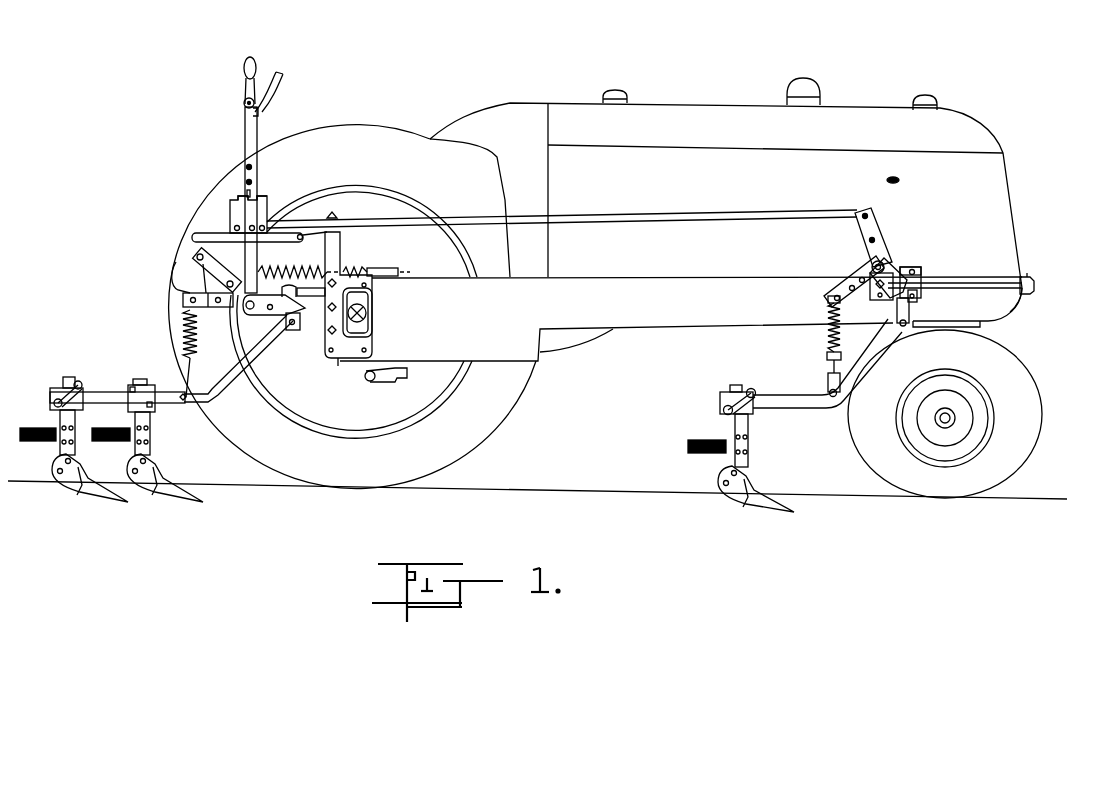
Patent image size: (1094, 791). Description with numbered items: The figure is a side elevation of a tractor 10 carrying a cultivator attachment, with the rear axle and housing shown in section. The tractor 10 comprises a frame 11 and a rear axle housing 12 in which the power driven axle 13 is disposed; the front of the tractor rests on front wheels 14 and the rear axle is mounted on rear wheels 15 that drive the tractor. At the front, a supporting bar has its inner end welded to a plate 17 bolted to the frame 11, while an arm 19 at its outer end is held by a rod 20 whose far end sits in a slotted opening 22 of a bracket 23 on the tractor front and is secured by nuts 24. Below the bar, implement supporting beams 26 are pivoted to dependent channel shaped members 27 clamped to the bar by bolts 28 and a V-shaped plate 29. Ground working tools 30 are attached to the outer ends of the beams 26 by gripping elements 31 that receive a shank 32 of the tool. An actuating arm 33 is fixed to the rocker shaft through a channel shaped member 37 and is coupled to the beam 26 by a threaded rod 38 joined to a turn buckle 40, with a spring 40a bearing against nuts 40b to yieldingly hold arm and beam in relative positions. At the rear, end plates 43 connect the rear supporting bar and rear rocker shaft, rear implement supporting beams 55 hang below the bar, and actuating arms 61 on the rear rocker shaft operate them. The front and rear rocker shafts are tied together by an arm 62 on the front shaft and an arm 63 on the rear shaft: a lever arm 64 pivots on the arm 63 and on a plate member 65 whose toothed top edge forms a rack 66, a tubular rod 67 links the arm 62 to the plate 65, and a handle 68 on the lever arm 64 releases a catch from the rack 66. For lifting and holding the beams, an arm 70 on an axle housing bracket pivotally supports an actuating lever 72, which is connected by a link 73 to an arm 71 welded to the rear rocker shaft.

The tractor 10 is at (690, 105).
The frame 11 is at (697, 317).
The rear axle housing 12 is at (349, 350).
The power driven axle 13 is at (372, 326).
The front wheels 14 is at (1017, 357).
The rear wheels 15 is at (513, 412).
The plate 17 is at (918, 272).
The arm 19 is at (917, 298).
The rod 20 is at (965, 283).
The slotted opening 22 is at (1036, 286).
The bracket 23 is at (1032, 277).
The nuts 24 is at (1024, 296).
The implement supporting beams 26 is at (794, 410).
The channel shaped members 27 is at (909, 313).
The bolts 28 is at (912, 268).
The plate 29 is at (892, 300).
The ground working tools 30 is at (756, 480).
The gripping elements 31 is at (733, 390).
The shank 32 is at (748, 426).
The actuating arm 33 is at (850, 284).
The channel shaped member 37 is at (866, 253).
The threaded rod 38 is at (840, 356).
The turn buckle 40 is at (828, 380).
The spring 40a is at (828, 333).
The nuts 40b is at (827, 357).
The end plates 43 is at (283, 326).
The implement supporting beams 55 is at (222, 398).
The actuating arms 61 is at (212, 309).
The arm 62 is at (873, 218).
The arm 63 is at (262, 263).
The lever arm 64 is at (245, 133).
The plate member 65 is at (230, 208).
The rack 66 is at (263, 199).
The tubular rod 67 is at (598, 217).
The handle 68 is at (284, 73).
The arm 70 is at (340, 250).
The arm 71 is at (194, 258).
The actuating lever 72 is at (205, 237).
The link 73 is at (295, 248).